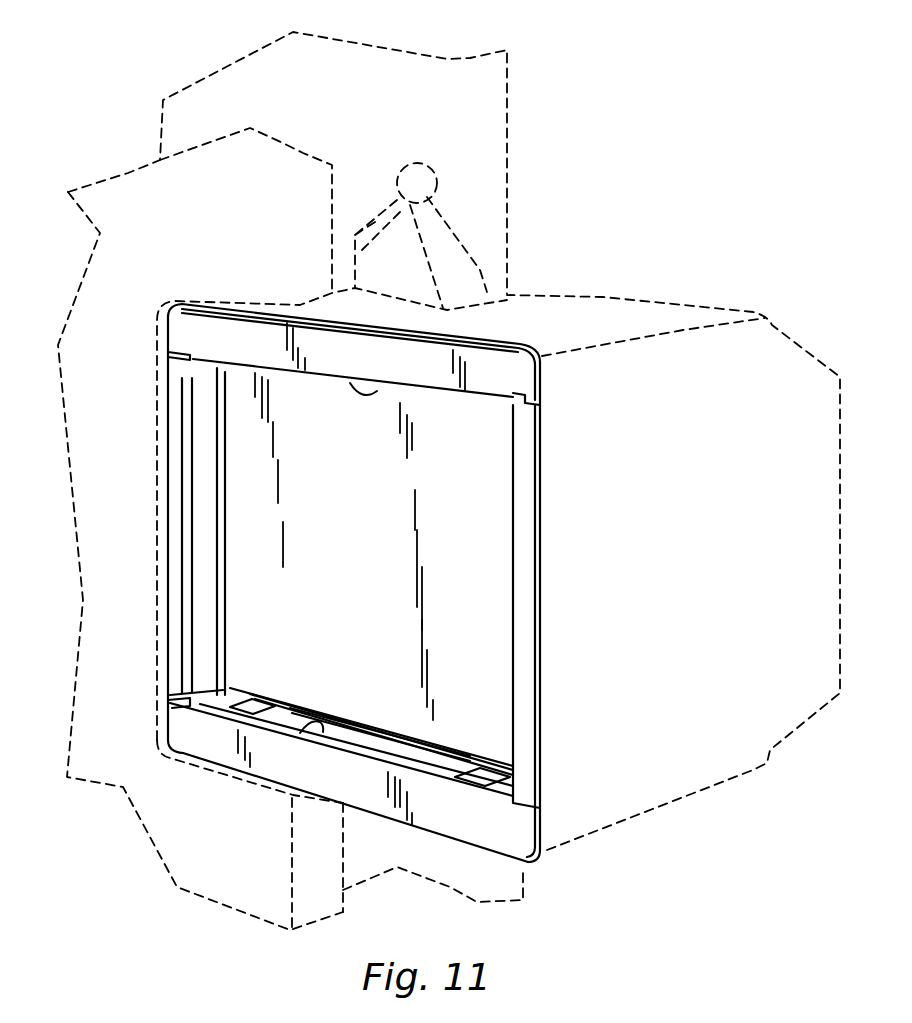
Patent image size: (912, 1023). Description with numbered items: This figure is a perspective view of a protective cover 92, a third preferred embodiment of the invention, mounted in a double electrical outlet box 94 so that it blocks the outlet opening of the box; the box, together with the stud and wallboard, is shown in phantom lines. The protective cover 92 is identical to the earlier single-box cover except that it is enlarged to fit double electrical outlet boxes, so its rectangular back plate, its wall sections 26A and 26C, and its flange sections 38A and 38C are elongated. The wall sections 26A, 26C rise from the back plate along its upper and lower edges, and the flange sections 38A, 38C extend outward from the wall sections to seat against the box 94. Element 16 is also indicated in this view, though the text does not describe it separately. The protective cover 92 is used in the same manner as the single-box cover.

The frame assembly 16 is at (202, 323).
The wall section 26A is at (300, 733).
The wall section 26C is at (350, 381).
The flange section 38A is at (469, 820).
The flange section 38C is at (433, 362).
The protective cover 92 is at (243, 507).
The double electrical outlet box 94 is at (738, 423).